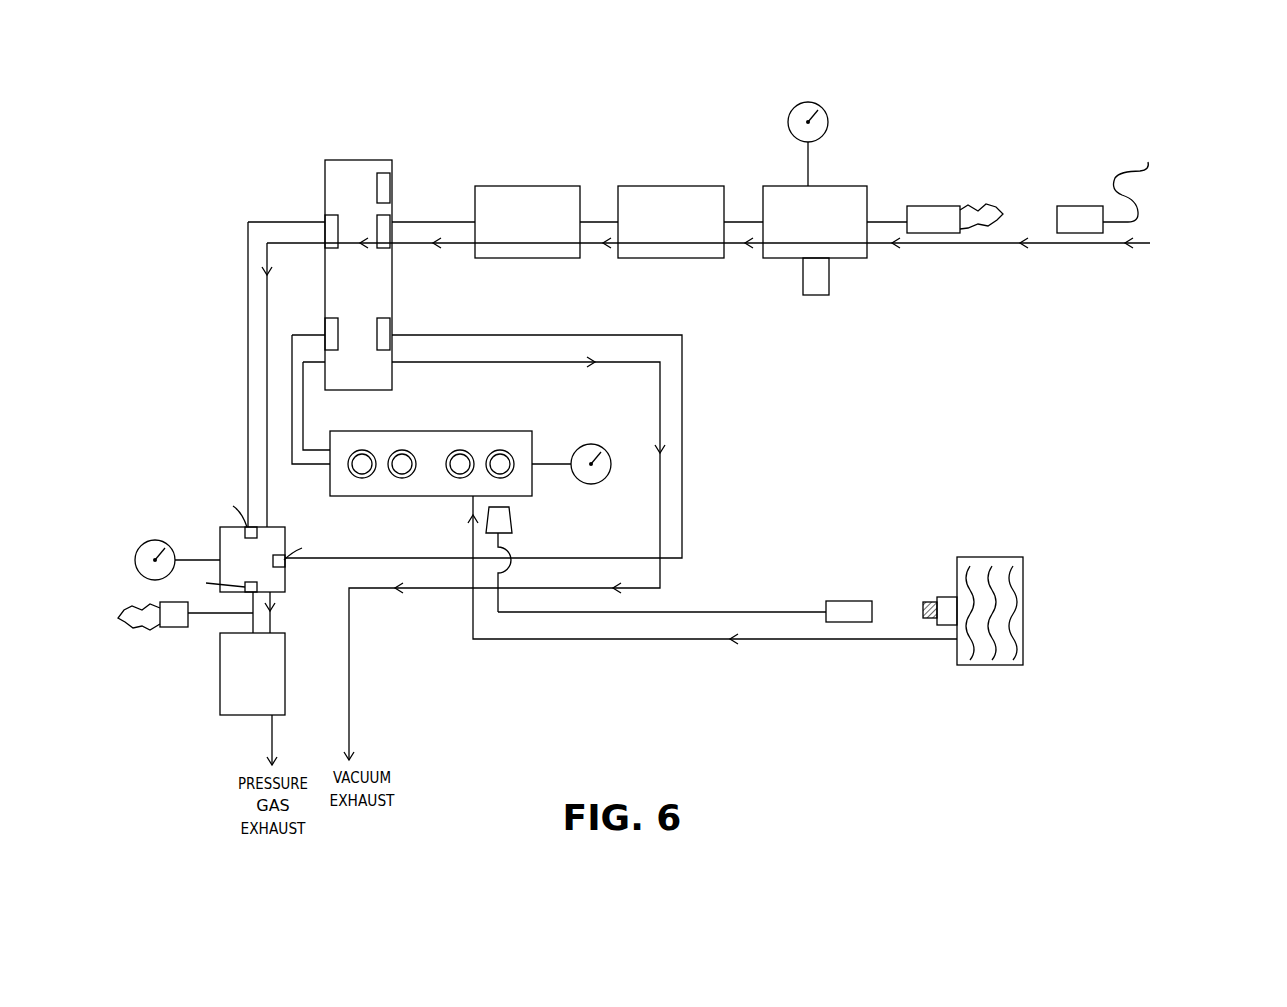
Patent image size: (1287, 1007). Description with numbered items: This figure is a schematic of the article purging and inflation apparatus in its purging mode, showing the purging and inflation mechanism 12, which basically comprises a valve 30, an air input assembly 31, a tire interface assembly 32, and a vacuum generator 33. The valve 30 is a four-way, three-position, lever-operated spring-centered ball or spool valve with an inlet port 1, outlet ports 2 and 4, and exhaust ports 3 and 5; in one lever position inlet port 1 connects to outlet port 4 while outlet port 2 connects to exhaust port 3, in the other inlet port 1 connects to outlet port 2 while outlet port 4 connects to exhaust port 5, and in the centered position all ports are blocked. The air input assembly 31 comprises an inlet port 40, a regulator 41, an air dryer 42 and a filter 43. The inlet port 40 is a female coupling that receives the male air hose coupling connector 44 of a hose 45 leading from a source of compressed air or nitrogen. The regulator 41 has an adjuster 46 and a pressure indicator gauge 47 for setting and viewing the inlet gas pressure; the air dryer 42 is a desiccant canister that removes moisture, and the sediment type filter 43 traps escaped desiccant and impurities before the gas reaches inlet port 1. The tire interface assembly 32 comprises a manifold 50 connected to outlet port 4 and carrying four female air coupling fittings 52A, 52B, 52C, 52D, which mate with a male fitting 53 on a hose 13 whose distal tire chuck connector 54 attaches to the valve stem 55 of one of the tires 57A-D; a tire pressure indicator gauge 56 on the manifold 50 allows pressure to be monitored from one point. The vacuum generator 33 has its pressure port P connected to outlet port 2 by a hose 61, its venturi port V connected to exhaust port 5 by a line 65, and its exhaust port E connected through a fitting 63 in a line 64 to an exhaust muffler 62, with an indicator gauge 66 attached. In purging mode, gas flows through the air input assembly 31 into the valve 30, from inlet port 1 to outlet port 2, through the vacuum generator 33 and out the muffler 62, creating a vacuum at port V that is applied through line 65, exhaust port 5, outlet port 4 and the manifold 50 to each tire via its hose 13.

The inlet port 1 is at (388, 224).
The outlet port 2 is at (331, 225).
The exhaust port 3 is at (388, 180).
The outlet port 4 is at (330, 328).
The exhaust port 5 is at (387, 328).
The purging and inflation mechanism 12 is at (1015, 140).
The hose 13 is at (721, 612).
The valve 30 is at (361, 130).
The air input assembly 31 is at (716, 114).
The tire interface assembly 32 is at (709, 670).
The vacuum generator 33 is at (222, 543).
The inlet port 40 is at (930, 206).
The regulator 41 is at (850, 186).
The air dryer 42 is at (665, 186).
The filter 43 is at (522, 186).
The air hose coupling connector 44 is at (1080, 206).
The hose 45 is at (1130, 170).
The adjuster 46 is at (816, 300).
The pressure indicator gauge 47 is at (808, 102).
The manifold 50 is at (542, 408).
The air coupling fitting 52A is at (362, 450).
The air coupling fitting 52B is at (402, 478).
The air coupling fitting 52C is at (461, 450).
The air coupling fitting 52D is at (499, 450).
The male fitting 53 is at (512, 519).
The tire chuck connector 54 is at (851, 601).
The valve stem 55 is at (946, 597).
The tire pressure indicator gauge 56 is at (592, 486).
The tires 57A-D is at (993, 542).
The hose 61 is at (248, 353).
The exhaust muffler 62 is at (238, 715).
The fitting 63 is at (170, 628).
The exhaust line 64 is at (255, 622).
The line 65 is at (684, 428).
The indicator gauge 66 is at (152, 541).